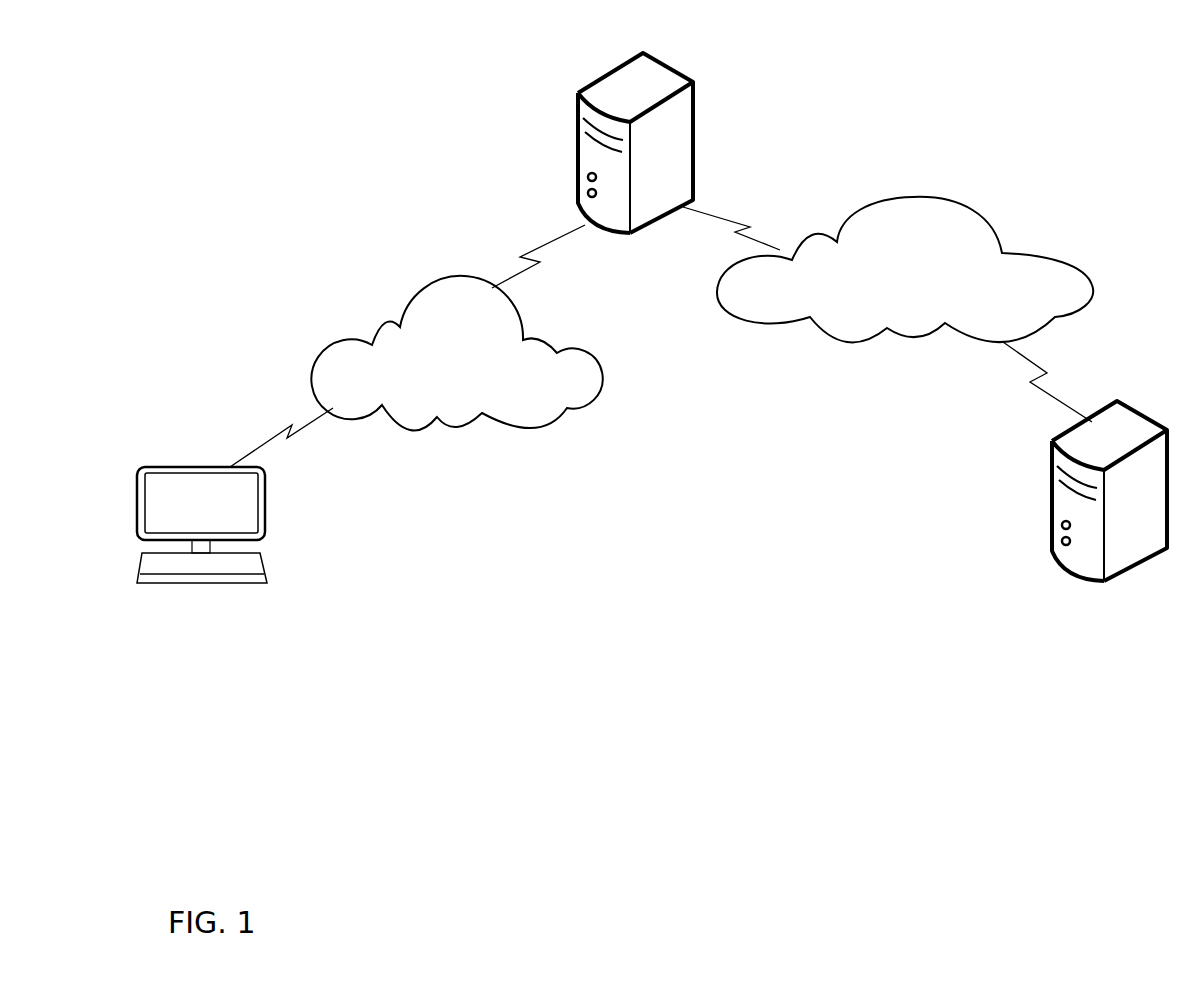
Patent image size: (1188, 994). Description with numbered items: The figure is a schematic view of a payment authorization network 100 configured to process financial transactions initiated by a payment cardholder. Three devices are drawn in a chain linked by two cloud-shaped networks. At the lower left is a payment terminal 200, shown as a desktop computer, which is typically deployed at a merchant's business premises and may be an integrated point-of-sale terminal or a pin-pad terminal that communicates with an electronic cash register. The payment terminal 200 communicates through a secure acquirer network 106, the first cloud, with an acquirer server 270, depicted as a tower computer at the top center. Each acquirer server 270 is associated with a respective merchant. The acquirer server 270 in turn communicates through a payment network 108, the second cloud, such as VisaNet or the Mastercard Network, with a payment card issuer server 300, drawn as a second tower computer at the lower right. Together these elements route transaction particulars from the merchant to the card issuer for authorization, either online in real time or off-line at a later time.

The payment authorization network 100 is at (649, 838).
The acquirer network 106 is at (537, 430).
The payment network 108 is at (980, 220).
The payment terminal 200 is at (260, 575).
The acquirer server 270 is at (672, 70).
The payment card issuer server 300 is at (1050, 537).